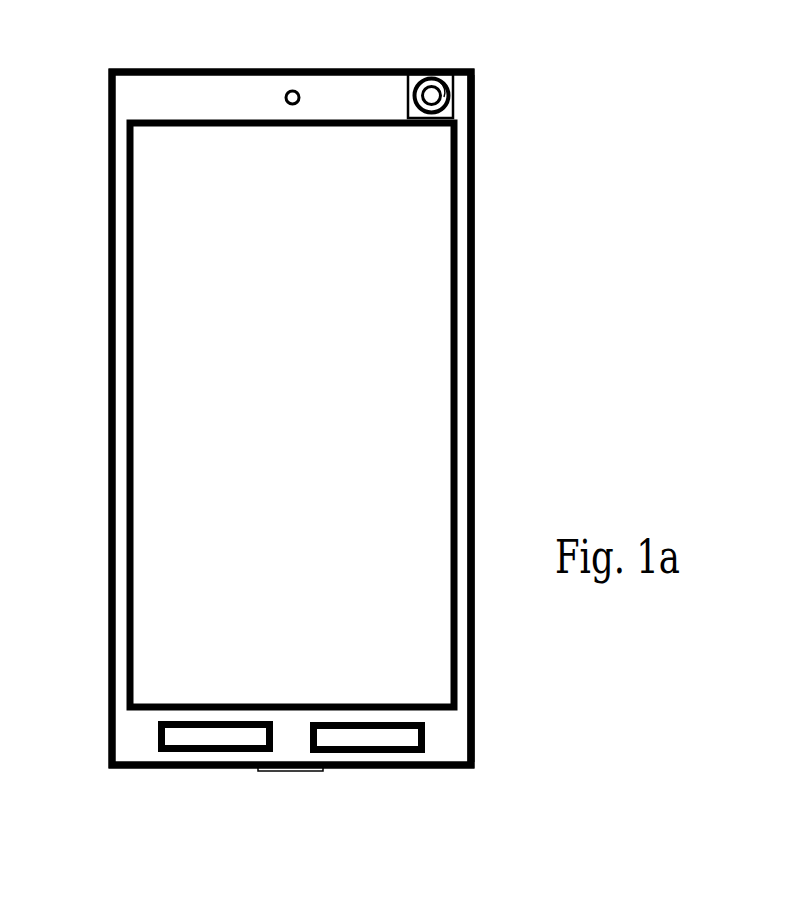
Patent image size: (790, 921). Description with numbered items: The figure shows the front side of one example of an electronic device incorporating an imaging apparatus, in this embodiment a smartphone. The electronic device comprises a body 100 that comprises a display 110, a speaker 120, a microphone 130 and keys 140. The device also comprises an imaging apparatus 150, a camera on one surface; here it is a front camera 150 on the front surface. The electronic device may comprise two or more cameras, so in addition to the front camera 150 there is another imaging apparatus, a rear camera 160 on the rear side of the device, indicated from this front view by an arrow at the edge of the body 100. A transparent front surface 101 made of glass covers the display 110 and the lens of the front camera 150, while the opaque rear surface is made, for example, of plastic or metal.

The body 100 is at (120, 100).
The transparent front surface 101 is at (120, 207).
The display 110 is at (153, 316).
The speaker 120 is at (288, 90).
The microphone 130 is at (285, 773).
The keys 140 is at (326, 722).
The front camera 150 is at (442, 74).
The rear camera 160 is at (492, 214).